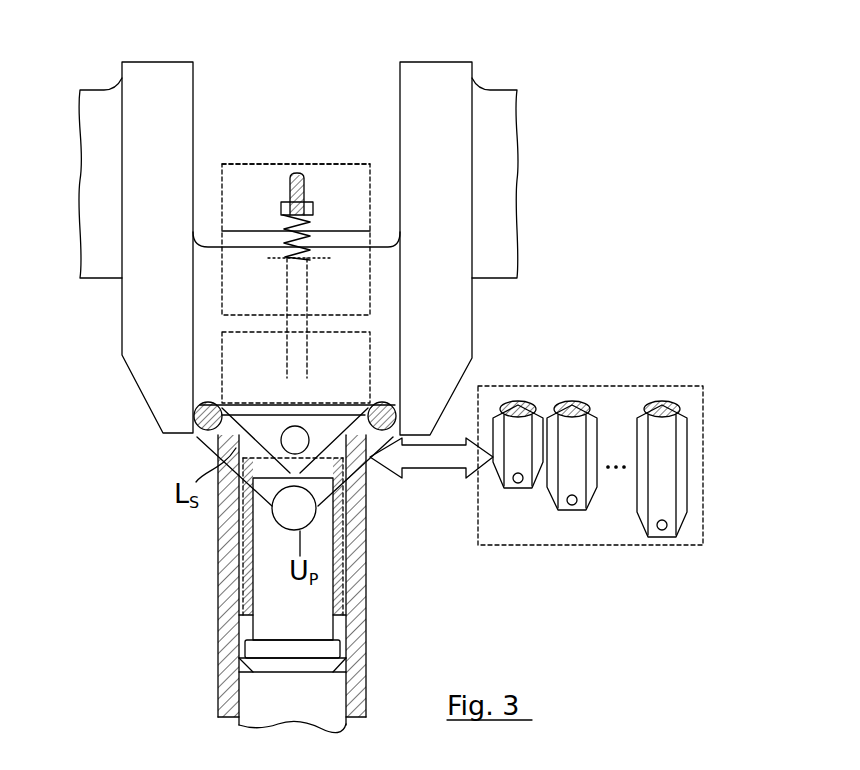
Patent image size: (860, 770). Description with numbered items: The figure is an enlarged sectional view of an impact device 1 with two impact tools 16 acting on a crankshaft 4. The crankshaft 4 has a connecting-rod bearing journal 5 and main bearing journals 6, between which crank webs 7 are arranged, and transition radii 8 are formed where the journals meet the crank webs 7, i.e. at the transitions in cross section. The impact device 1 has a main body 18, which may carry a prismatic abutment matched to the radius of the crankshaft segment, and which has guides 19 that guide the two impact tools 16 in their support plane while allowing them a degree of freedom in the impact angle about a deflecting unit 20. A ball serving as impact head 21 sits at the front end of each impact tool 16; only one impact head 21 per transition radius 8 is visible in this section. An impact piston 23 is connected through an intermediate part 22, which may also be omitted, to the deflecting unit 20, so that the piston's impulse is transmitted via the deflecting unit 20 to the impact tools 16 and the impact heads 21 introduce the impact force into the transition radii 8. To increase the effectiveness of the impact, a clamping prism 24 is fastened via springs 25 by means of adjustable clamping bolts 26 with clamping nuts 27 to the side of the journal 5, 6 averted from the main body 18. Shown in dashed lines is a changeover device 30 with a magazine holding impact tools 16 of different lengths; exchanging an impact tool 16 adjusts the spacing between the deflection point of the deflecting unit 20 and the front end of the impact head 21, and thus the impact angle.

The impact device 1 is at (392, 607).
The crankshaft 4 is at (344, 221).
The connecting-rod bearing journal 5 is at (206, 276).
The main bearing journal 6 is at (96, 98).
The crank web 7 is at (160, 72).
The transition radius 8 is at (122, 82).
The impact tool 16 is at (376, 479).
The main body 18 is at (360, 578).
The guide 19 is at (246, 518).
The deflecting unit 20 is at (280, 522).
The impact head 21 is at (196, 435).
The intermediate part 22 is at (268, 622).
The impact piston 23 is at (310, 716).
The clamping prism 24 is at (238, 178).
The spring 25 is at (300, 258).
The clamping bolt 26 is at (297, 172).
The clamping nut 27 is at (305, 204).
The changeover device 30 is at (647, 386).